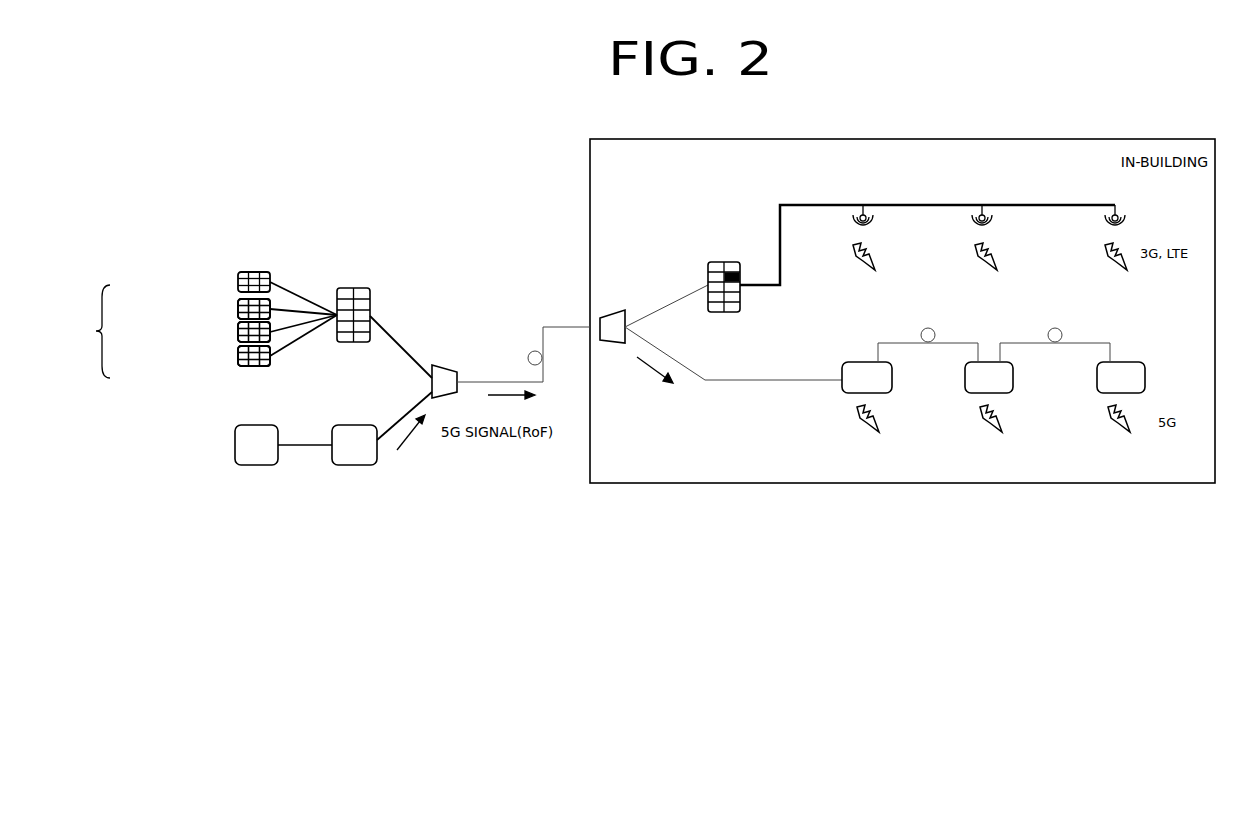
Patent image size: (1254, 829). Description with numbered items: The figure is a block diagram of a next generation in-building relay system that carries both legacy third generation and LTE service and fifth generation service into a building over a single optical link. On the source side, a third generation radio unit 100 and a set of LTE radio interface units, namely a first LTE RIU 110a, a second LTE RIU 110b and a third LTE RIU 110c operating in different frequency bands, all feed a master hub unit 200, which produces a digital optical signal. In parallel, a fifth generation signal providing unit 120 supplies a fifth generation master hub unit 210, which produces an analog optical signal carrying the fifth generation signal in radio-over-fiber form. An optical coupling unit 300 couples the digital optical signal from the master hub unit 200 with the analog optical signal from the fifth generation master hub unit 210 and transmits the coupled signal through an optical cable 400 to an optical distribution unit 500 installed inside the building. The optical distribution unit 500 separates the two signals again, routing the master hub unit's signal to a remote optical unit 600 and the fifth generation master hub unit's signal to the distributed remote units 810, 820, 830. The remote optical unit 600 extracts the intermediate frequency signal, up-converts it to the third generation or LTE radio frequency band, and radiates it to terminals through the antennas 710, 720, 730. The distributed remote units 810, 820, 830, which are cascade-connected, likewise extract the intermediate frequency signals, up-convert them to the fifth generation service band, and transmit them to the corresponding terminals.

The 3rd generation radio unit (3G RU) 100 is at (300, 254).
The 1.8G LTE RIU 110a is at (238, 302).
The 900M LTE RIU 110b is at (238, 330).
The 2.1G LTE RIU 110c is at (238, 357).
The 5G signal providing unit 120 is at (235, 440).
The master hub unit (MHU) 200 is at (355, 288).
The 5G MHU 210 is at (377, 460).
The optical coupling unit 300 is at (455, 370).
The optical cable 400 is at (560, 327).
The optical distribution unit 500 is at (616, 343).
The remote optical unit (ROU) 600 is at (725, 262).
The antenna 710 is at (855, 222).
The antenna 720 is at (974, 222).
The antenna 730 is at (1107, 222).
The distributed remote unit (DRU) 810 is at (850, 394).
The distributed remote unit (DRU) 820 is at (972, 394).
The distributed remote unit (DRU) 830 is at (1103, 394).